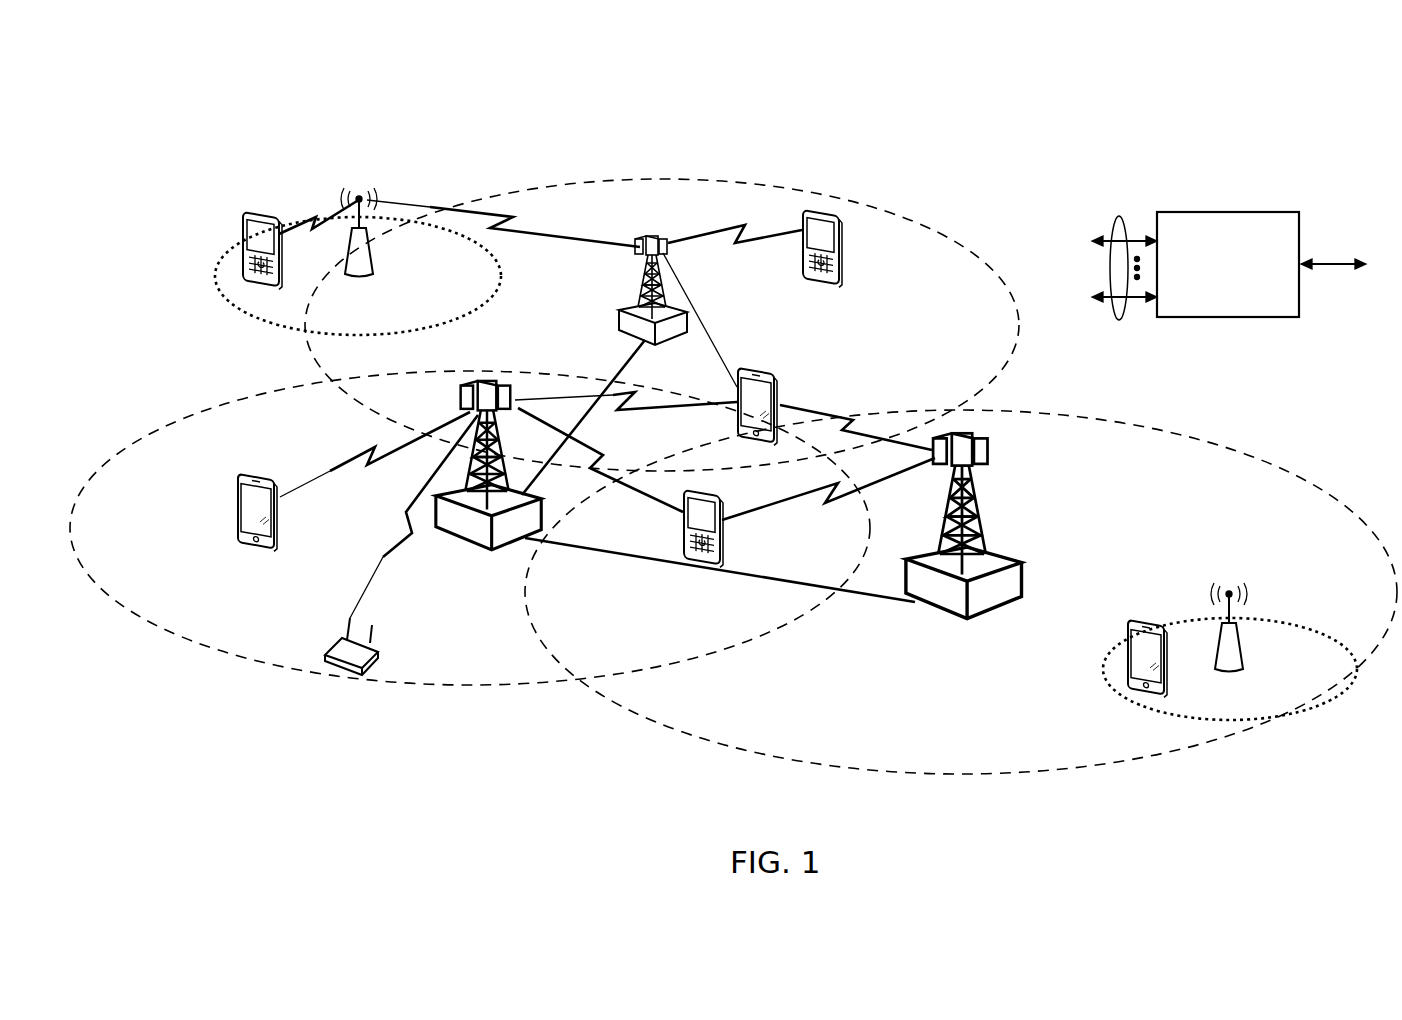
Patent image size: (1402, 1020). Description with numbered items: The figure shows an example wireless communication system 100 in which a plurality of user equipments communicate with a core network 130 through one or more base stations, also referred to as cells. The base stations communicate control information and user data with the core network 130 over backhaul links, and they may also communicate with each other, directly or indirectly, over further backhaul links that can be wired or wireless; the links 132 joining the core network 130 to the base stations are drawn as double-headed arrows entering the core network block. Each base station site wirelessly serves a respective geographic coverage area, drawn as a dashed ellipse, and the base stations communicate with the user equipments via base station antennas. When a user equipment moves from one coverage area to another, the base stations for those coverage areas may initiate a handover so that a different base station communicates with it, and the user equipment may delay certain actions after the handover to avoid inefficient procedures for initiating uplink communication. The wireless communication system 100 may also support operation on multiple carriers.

The wireless communication system 100 is at (1301, 101).
The core network 130 is at (1215, 212).
The backhaul link 132 is at (1120, 220).